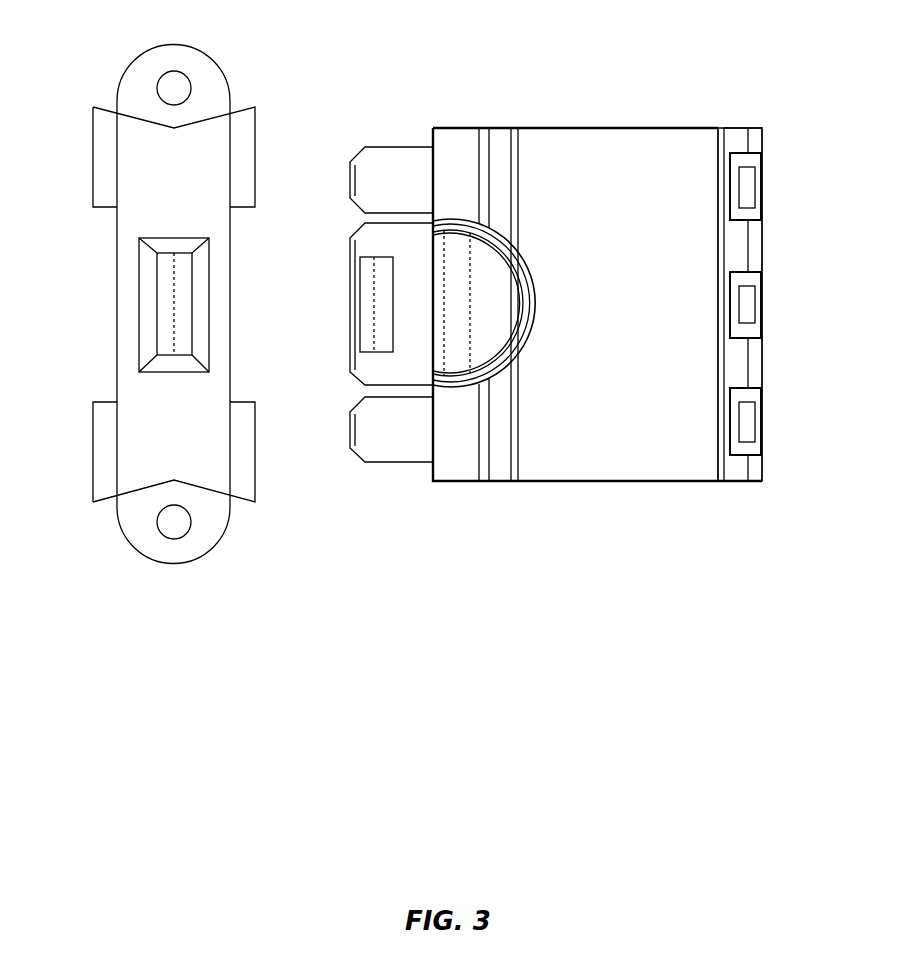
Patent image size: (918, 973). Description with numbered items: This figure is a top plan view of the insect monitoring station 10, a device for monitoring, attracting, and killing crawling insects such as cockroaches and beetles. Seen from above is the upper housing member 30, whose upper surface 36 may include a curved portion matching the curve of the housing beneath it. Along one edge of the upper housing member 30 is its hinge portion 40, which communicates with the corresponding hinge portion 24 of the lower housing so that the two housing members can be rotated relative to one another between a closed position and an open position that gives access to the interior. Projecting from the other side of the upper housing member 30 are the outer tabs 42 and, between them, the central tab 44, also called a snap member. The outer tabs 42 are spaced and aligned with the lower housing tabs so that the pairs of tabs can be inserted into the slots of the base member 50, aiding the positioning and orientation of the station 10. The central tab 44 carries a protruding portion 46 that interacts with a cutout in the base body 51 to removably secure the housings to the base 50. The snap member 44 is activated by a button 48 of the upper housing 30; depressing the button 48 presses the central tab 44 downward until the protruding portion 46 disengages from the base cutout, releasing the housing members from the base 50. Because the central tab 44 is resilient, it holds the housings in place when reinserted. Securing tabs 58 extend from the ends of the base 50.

The insect monitoring station 10 is at (648, 68).
The hinge portion of lower housing member 24 is at (757, 190).
The upper housing member 30 is at (566, 146).
The upper surface 36 is at (697, 140).
The hinge portion of upper housing member 40 is at (757, 142).
The tabs 42 is at (368, 171).
The central tab 44 is at (368, 242).
The protruding portion 46 is at (368, 304).
The button 48 is at (457, 290).
The base member 50 is at (115, 288).
The base body 51 is at (135, 144).
The securing tabs 58 is at (141, 84).